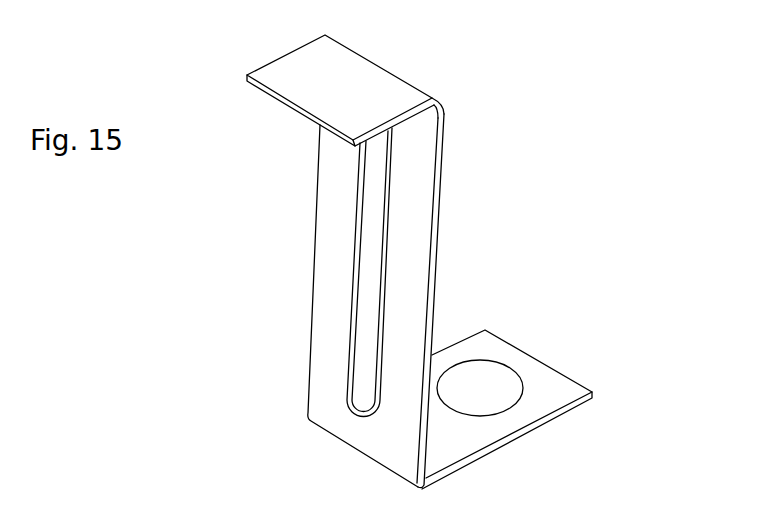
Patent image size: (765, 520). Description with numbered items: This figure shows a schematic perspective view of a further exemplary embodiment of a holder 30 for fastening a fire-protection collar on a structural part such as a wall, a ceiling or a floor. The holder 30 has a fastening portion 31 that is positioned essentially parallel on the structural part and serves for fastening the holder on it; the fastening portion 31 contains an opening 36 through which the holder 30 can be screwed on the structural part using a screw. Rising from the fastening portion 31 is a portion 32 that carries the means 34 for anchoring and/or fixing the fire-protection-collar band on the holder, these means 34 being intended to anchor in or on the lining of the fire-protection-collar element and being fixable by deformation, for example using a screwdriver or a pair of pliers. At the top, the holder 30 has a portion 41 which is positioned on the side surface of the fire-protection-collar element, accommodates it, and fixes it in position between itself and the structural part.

The holder 30 is at (538, 89).
The fastening portion 31 is at (490, 345).
The anchoring portion 32 is at (437, 225).
The anchoring means 34 is at (409, 377).
The opening 36 is at (498, 388).
The collar-accommodating portion 41 is at (355, 88).